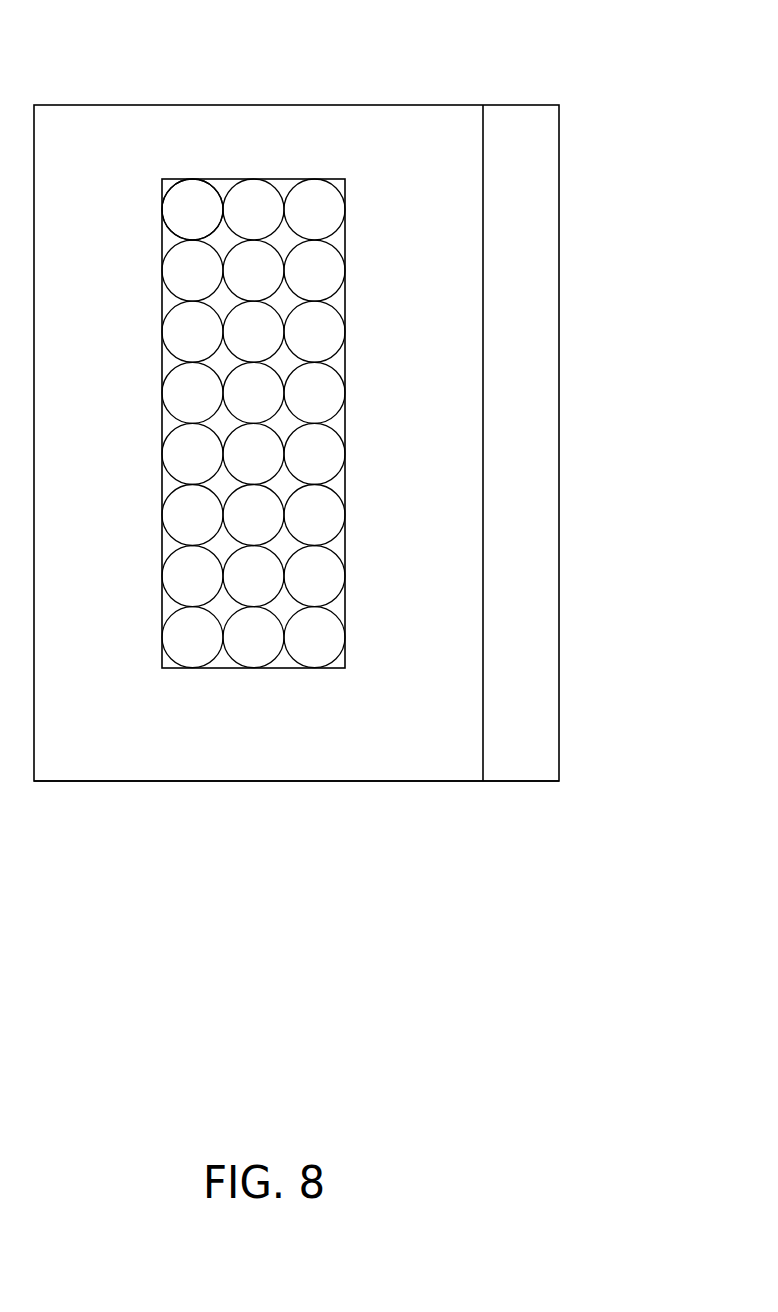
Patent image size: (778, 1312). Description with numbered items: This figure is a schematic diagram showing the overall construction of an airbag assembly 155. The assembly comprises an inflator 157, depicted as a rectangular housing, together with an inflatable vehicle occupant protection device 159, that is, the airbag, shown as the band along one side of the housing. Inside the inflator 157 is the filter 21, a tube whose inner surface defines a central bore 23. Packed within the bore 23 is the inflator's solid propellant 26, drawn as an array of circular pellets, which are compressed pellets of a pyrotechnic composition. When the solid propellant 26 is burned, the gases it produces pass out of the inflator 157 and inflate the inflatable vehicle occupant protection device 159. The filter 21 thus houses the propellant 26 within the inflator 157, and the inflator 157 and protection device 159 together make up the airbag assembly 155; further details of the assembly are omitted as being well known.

The airbag assembly 155 is at (358, 75).
The inflatable vehicle occupant protection device 159 is at (535, 428).
The inflator 157 is at (404, 748).
The tube 21 is at (360, 224).
The central bore 23 is at (224, 657).
The solid propellant 26 is at (192, 208).